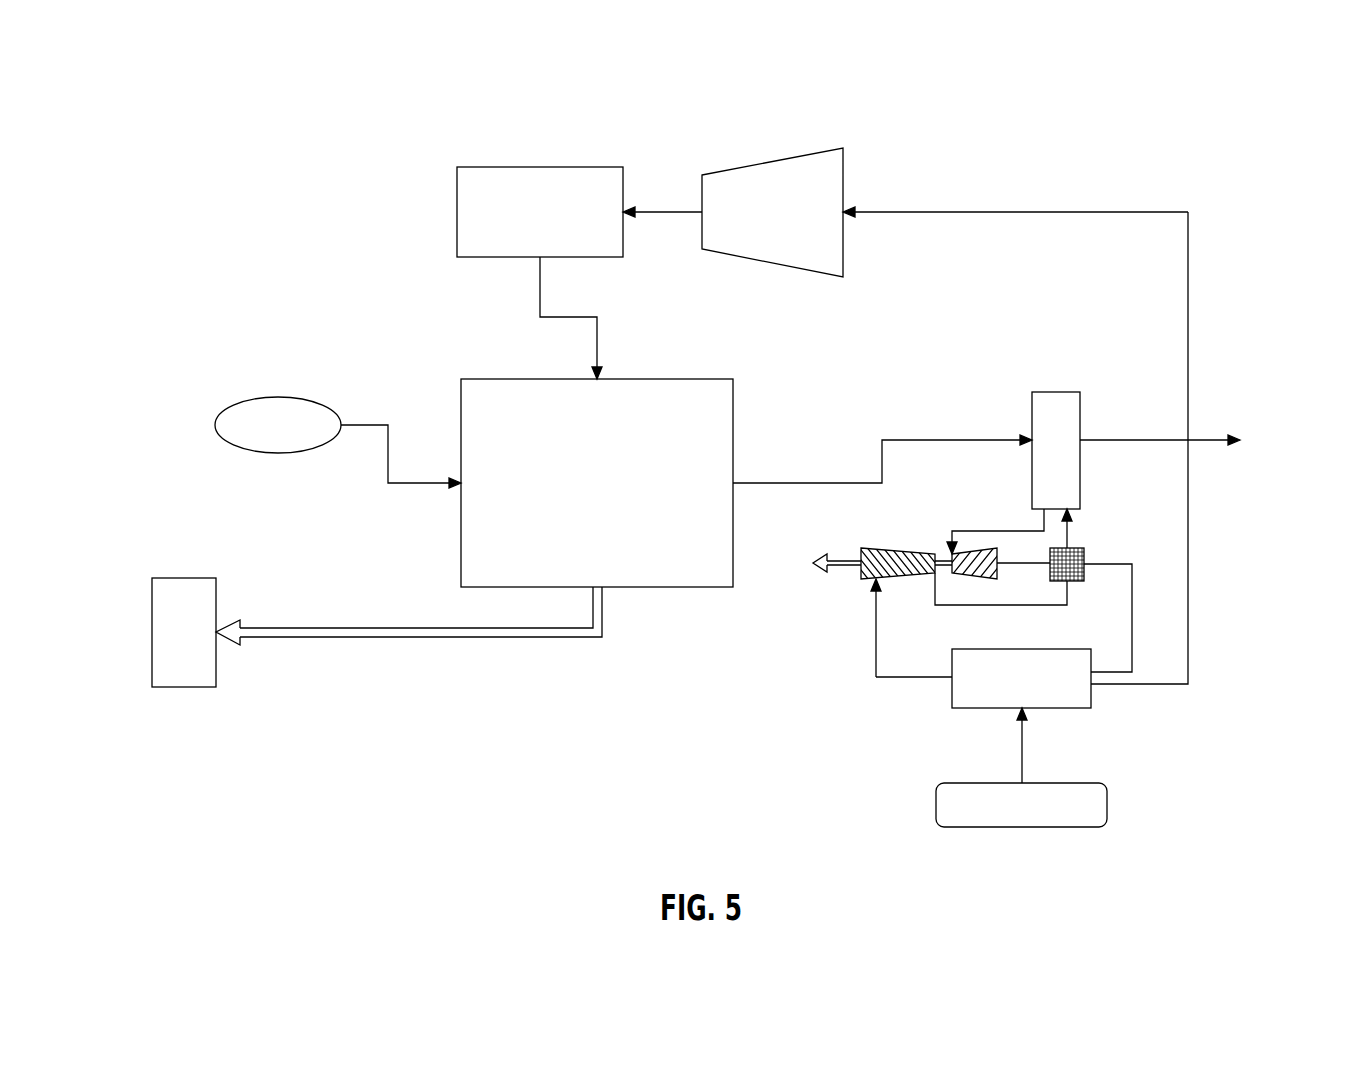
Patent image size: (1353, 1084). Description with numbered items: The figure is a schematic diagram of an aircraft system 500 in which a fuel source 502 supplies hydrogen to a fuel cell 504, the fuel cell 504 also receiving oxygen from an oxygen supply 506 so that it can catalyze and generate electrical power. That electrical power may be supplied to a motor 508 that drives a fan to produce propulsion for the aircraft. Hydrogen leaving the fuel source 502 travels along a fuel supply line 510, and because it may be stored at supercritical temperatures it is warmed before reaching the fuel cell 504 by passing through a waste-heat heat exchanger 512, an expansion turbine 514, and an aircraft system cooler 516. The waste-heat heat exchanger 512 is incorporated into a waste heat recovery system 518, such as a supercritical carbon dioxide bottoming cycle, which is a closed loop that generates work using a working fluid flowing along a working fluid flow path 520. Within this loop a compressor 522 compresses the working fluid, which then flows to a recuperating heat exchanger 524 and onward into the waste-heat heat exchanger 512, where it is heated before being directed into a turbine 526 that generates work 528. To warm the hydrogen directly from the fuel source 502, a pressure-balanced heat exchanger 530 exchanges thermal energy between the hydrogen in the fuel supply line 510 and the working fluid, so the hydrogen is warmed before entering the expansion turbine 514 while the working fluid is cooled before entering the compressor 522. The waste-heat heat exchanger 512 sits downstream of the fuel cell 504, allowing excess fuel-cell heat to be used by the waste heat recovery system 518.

The aircraft system 500 is at (1200, 112).
The fuel source 502 is at (1108, 805).
The fuel cell 504 is at (497, 378).
The oxygen supply 506 is at (240, 402).
The motor 508 is at (178, 688).
The fuel supply line 510 is at (674, 210).
The waste-heat heat exchanger 512 is at (1050, 391).
The expansion turbine 514 is at (818, 150).
The aircraft system cooler 516 is at (497, 166).
The waste heat recovery system 518 is at (1017, 606).
The working fluid flow path 520 is at (993, 530).
The compressor 522 is at (873, 547).
The recuperating heat exchanger 524 is at (1073, 547).
The turbine 526 is at (978, 572).
The work 528 is at (843, 567).
The pressure-balanced heat exchanger 530 is at (952, 690).